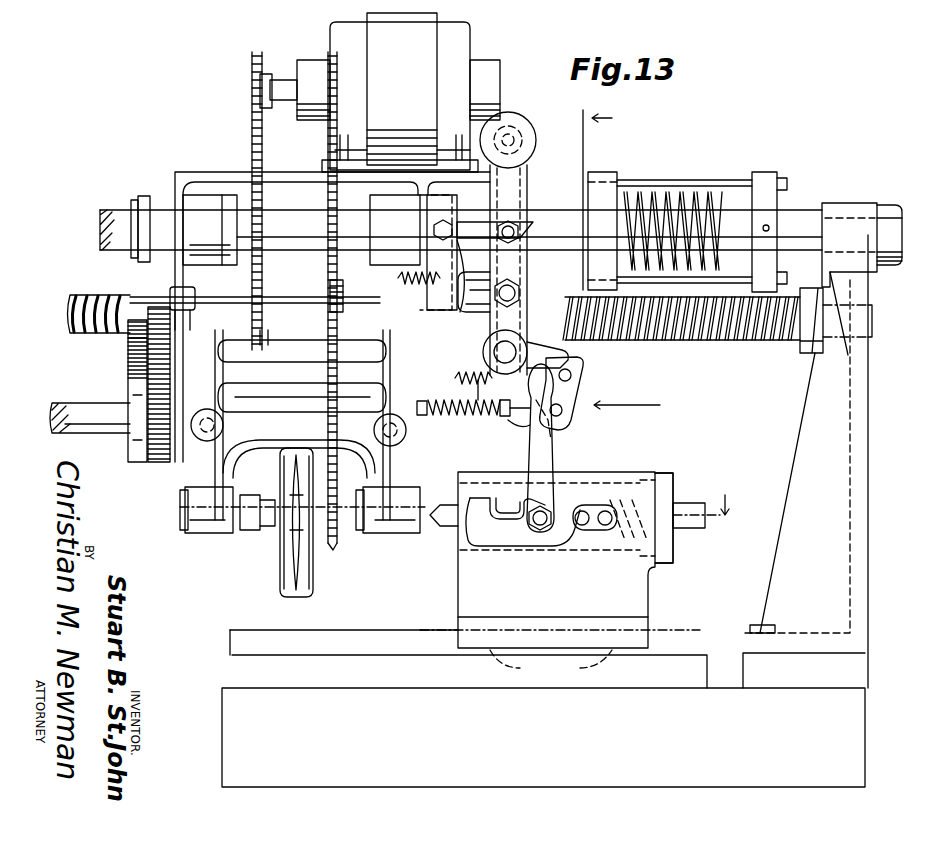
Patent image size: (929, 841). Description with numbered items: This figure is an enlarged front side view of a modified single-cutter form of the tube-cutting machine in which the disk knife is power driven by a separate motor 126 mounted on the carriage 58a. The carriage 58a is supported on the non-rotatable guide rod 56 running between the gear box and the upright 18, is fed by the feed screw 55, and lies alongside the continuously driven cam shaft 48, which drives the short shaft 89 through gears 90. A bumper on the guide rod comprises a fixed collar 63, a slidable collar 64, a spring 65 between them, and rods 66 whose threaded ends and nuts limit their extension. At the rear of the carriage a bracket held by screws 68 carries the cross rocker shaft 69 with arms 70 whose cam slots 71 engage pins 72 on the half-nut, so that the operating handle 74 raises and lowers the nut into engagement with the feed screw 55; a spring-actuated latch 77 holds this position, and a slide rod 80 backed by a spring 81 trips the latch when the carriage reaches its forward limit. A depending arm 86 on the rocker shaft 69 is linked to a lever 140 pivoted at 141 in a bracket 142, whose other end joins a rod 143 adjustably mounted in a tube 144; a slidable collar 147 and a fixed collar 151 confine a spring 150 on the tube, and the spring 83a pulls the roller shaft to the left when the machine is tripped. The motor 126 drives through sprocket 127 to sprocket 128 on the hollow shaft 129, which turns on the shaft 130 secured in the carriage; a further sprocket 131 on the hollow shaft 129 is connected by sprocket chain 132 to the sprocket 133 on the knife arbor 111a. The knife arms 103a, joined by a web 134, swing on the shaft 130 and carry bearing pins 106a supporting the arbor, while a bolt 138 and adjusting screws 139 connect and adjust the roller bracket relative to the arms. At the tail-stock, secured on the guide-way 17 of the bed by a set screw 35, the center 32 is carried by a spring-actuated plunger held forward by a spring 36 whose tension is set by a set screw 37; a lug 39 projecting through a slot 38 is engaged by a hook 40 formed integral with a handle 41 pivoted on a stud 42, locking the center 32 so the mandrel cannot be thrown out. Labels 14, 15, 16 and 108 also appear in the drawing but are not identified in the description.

The pivot arrow 14 is at (720, 515).
The section line 15 is at (614, 254).
The base 16 is at (543, 708).
The guide-way 17 is at (678, 640).
The upright 18 is at (823, 445).
The center 32 is at (440, 503).
The set screw 35 is at (560, 575).
The spring 36 is at (640, 476).
The set screw 37 is at (688, 528).
The slot 38 is at (598, 470).
The lug 39 is at (592, 535).
The hook 40 is at (475, 525).
The handle 41 is at (531, 444).
The stud 42 is at (536, 530).
The cam shaft 48 is at (80, 410).
The feed screw 55 is at (68, 314).
The guide rod 56 is at (461, 230).
The carriage 58a is at (185, 174).
The collar 63 is at (762, 174).
The collar 64 is at (606, 172).
The spring 65 is at (688, 200).
The rods 66 is at (684, 213).
The screws 68 is at (681, 318).
The cross rocker shaft 69 is at (483, 348).
The arm 70 is at (474, 281).
The cam slot 71 is at (476, 298).
The pins 72 is at (515, 292).
The operating handle 74 is at (527, 204).
The spring-actuated latch 77 is at (505, 222).
The slide rod 80 is at (226, 298).
The spring 81 is at (417, 253).
The spring 83a is at (460, 384).
The depending arm 86 is at (464, 400).
The short shaft 89 is at (128, 336).
The gears 90 is at (155, 462).
The knife arms 103a is at (223, 476).
The bearing pins 106a is at (358, 533).
The disc 108 is at (296, 545).
The arbor 111a is at (262, 503).
The motor 126 is at (487, 100).
The sprocket 127 is at (252, 56).
The sprocket 128 is at (252, 352).
The hollow shaft 129 is at (292, 296).
The shaft 130 is at (138, 345).
The sprocket 131 is at (337, 282).
The sprocket chain 132 is at (330, 372).
The sprocket 133 is at (341, 308).
The web 134 is at (264, 432).
The bolt 138 is at (374, 430).
The adjusting screws 139 is at (205, 441).
The lever 140 is at (575, 398).
The pivot 141 is at (572, 376).
The bracket 142 is at (572, 358).
The rod 143 is at (560, 418).
The tube 144 is at (478, 418).
The collar 147 is at (445, 418).
The spring 150 is at (505, 416).
The fixed collar 151 is at (540, 428).